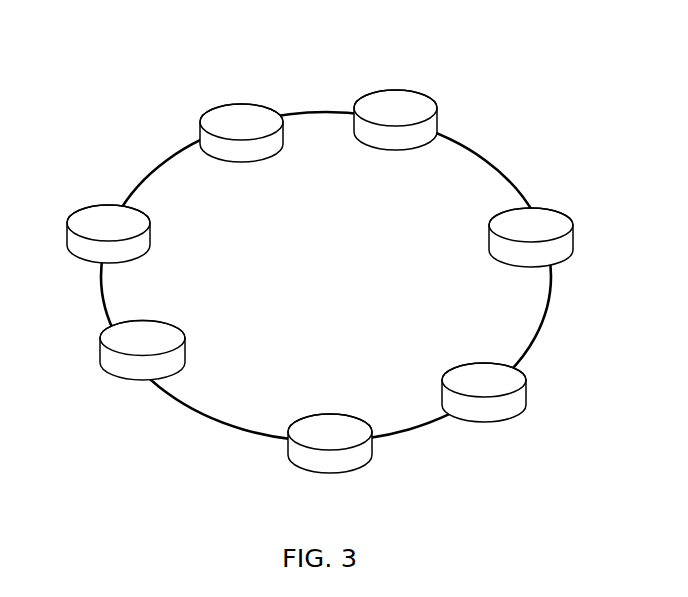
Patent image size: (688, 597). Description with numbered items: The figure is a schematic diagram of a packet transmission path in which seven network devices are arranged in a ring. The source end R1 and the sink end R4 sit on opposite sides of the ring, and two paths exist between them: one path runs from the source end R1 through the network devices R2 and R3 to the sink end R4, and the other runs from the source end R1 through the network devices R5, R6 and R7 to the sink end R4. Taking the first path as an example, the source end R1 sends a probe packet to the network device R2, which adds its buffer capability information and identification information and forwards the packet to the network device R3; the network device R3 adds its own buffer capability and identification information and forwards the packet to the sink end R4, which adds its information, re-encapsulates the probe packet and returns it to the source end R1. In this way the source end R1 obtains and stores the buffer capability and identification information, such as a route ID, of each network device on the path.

The source end R1 is at (95, 206).
The network device R2 is at (241, 115).
The network device R3 is at (397, 105).
The sink end R4 is at (547, 211).
The network device R5 is at (142, 379).
The network device R6 is at (342, 457).
The network device R7 is at (509, 392).